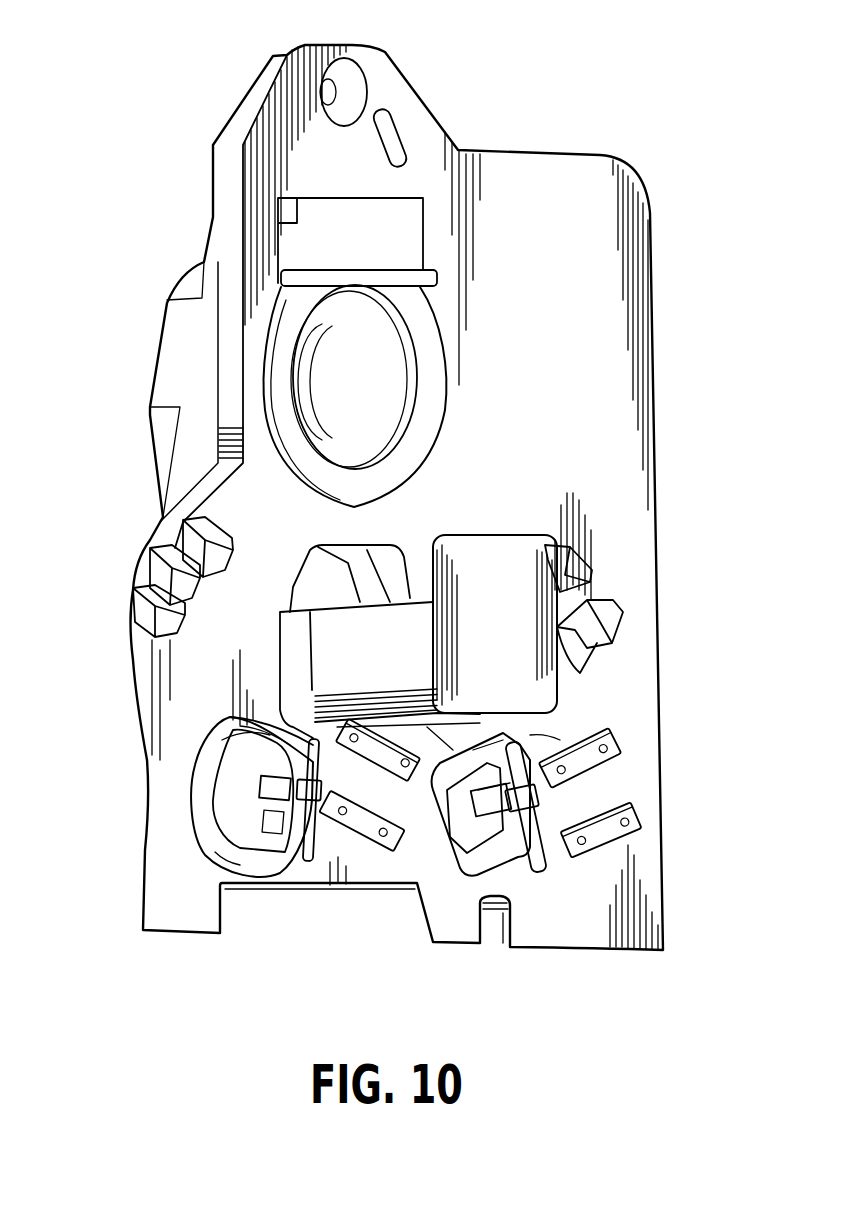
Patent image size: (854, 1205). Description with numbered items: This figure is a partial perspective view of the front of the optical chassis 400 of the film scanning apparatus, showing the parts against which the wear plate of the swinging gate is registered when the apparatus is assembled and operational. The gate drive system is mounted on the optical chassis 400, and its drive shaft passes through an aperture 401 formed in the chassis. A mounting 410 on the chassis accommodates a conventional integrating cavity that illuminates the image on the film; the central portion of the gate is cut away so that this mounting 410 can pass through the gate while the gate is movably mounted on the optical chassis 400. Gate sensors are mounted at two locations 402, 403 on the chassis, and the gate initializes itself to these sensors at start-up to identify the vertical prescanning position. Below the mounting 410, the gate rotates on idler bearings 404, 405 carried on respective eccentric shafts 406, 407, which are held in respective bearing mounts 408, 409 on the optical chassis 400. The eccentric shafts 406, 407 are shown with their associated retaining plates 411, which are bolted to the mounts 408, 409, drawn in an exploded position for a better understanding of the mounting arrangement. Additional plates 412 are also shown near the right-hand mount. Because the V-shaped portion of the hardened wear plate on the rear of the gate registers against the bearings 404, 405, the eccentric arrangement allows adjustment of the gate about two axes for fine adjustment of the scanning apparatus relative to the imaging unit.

The optical chassis 400 is at (598, 156).
The aperture 401 is at (388, 398).
The gate sensor location 402 is at (175, 548).
The gate sensor location 403 is at (623, 603).
The idler bearing 404 is at (262, 800).
The idler bearing 405 is at (520, 800).
The eccentric shaft 406 is at (229, 872).
The eccentric shaft 407 is at (548, 862).
The bearing mount 408 is at (207, 754).
The bearing mount 409 is at (512, 732).
The mounting 410 is at (472, 567).
The retaining plates 411 is at (365, 838).
The right guide plates 412 is at (632, 806).